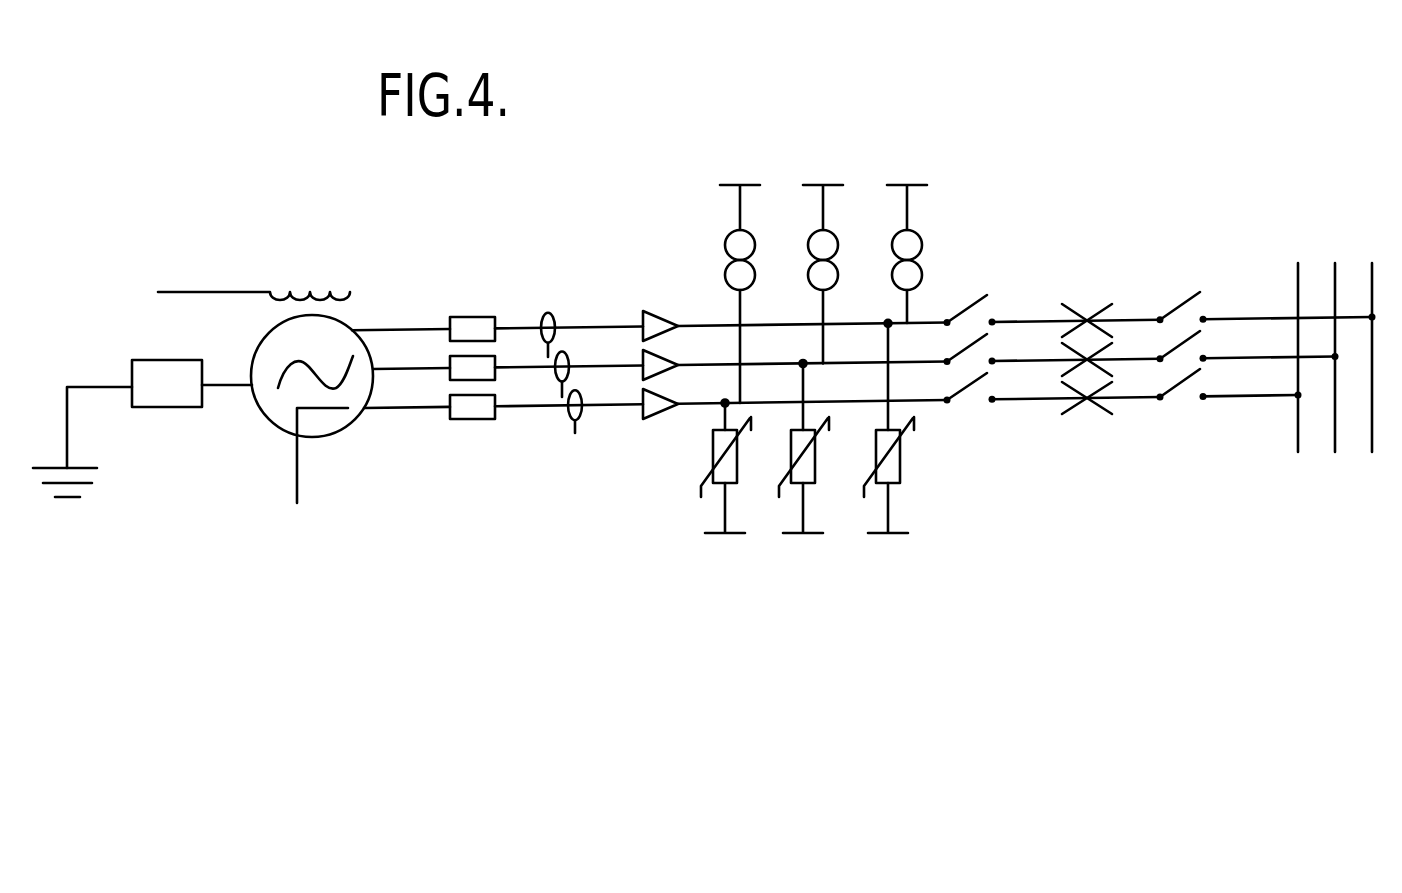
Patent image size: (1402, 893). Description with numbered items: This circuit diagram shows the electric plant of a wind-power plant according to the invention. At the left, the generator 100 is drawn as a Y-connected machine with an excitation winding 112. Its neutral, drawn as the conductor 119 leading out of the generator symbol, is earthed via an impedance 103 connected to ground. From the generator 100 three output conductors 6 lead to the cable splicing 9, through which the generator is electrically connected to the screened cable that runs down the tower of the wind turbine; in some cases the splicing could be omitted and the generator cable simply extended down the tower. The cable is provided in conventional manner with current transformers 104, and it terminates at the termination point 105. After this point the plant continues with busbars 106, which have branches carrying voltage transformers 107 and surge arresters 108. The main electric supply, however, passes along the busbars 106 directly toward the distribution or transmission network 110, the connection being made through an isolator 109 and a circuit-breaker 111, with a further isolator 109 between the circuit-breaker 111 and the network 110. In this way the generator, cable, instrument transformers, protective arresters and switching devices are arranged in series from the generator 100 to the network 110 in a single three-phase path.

The three-phase output lines 6 is at (400, 328).
The cable splicing 9 is at (478, 420).
The generator 100 is at (272, 428).
The impedance 103 is at (188, 408).
The current transformers 104 is at (550, 313).
The cable termination 105 is at (658, 310).
The busbars 106 is at (695, 405).
The voltage transformers 107 is at (913, 232).
The surge arresters 108 is at (898, 468).
The isolator 109 is at (1180, 294).
The distribution or transmission network 110 is at (1372, 462).
The circuit-breaker 111 is at (1095, 308).
The excitation winding 112 is at (229, 292).
The neutral conductor 119 is at (299, 480).